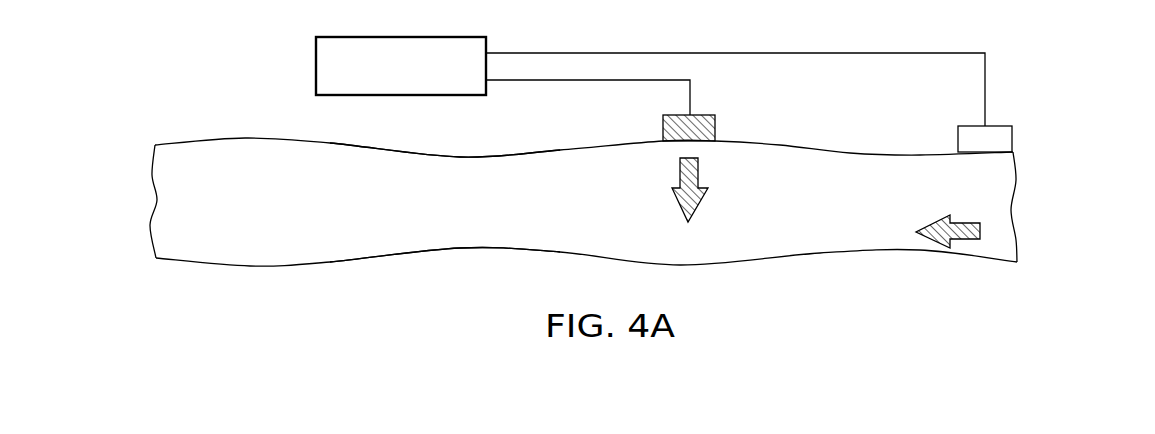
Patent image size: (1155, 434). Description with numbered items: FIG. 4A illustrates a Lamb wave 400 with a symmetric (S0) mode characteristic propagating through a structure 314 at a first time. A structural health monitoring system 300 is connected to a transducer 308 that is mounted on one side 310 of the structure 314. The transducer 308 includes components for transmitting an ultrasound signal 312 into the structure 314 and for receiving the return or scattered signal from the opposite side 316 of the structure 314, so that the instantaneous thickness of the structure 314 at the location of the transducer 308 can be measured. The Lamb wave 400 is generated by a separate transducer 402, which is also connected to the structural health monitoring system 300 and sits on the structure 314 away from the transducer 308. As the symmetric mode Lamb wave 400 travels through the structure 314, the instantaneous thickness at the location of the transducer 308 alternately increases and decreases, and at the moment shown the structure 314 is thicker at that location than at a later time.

The structural health monitoring system 300 is at (316, 62).
The ultrasonic transducer 308 is at (717, 125).
The first surface of structure 310 is at (433, 154).
The ultrasound propagation 312 is at (680, 170).
The structure 314 is at (455, 213).
The second surface of structure 316 is at (432, 256).
The lamb wave propagation 400 is at (917, 228).
The lamb wave transducer 402 is at (1013, 140).